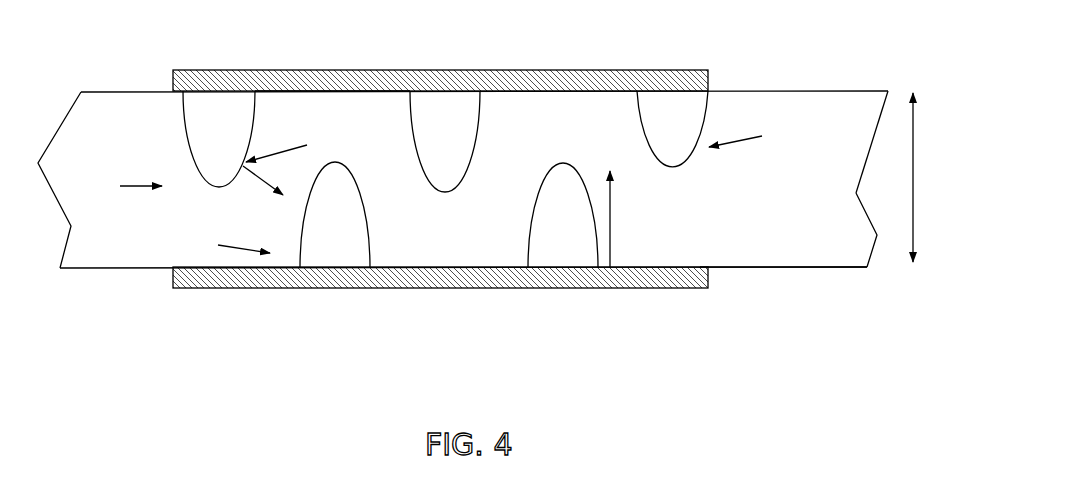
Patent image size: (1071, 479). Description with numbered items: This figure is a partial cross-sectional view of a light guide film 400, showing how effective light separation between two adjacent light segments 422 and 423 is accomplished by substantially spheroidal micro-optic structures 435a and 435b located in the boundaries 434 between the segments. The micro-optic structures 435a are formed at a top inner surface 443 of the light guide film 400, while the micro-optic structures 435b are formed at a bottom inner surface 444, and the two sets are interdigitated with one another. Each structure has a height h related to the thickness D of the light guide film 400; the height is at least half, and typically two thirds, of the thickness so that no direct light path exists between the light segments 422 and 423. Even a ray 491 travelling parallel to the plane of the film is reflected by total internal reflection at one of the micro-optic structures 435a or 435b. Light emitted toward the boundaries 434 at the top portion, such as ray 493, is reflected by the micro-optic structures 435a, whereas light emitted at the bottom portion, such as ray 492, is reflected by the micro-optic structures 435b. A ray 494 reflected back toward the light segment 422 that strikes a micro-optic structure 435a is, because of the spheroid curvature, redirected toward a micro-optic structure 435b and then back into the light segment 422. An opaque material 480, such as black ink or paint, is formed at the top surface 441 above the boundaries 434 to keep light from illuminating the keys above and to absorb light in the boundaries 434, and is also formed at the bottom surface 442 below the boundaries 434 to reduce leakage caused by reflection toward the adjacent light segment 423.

The light guide film 400 is at (84, 33).
The opaque material 480 is at (598, 70).
The top surface 441 is at (793, 82).
The bottom surface 442 is at (838, 268).
The top inner surface 443 is at (850, 94).
The bottom inner surface 444 is at (712, 251).
The light segment 422 is at (127, 251).
The light segment 423 is at (854, 224).
The boundaries 434 is at (466, 239).
The micro-optic structures 435a is at (243, 139).
The micro-optic structures 435b is at (358, 243).
The ray 491 is at (120, 187).
The ray 492 is at (223, 249).
The ray 493 is at (756, 136).
The ray 494 is at (284, 158).